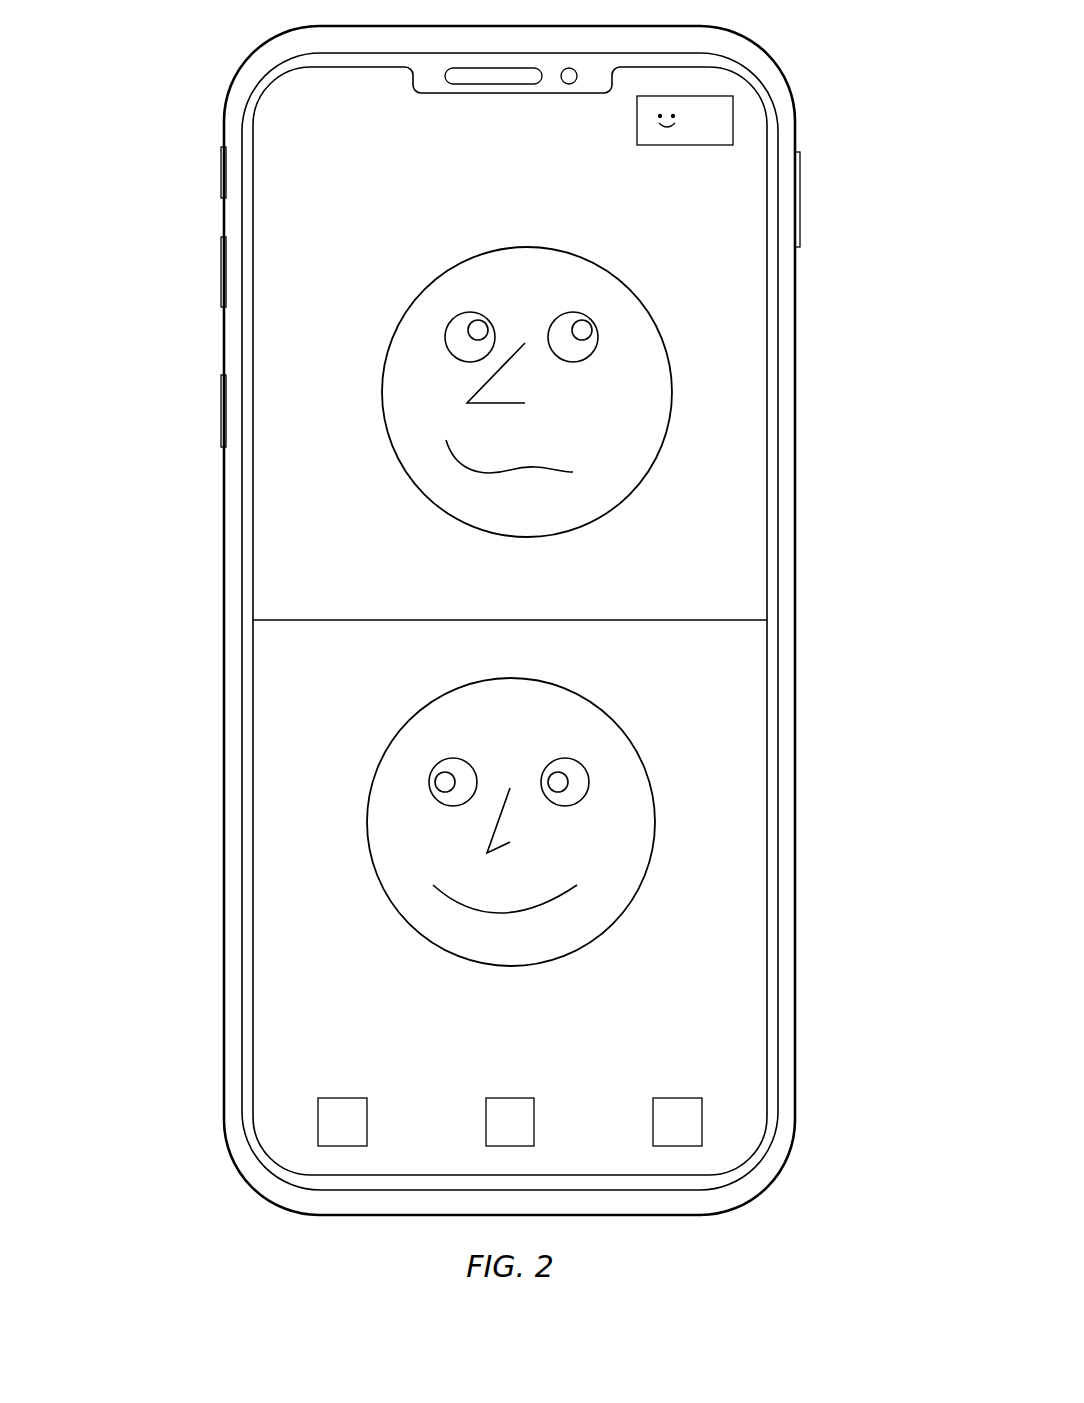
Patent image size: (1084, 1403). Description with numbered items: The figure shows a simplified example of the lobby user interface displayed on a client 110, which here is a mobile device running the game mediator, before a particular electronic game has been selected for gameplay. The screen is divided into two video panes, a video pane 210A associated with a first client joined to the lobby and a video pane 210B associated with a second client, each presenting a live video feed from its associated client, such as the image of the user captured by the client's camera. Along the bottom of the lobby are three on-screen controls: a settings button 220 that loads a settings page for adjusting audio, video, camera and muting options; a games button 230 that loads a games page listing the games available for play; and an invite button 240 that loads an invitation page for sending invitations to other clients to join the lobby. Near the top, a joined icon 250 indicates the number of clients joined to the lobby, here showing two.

The client 110 is at (226, 524).
The video pane 210A is at (510, 433).
The video pane 210B is at (466, 801).
The settings button 220 is at (325, 1133).
The games button 230 is at (493, 1108).
The invite button 240 is at (683, 1108).
The joined icon 250 is at (645, 124).